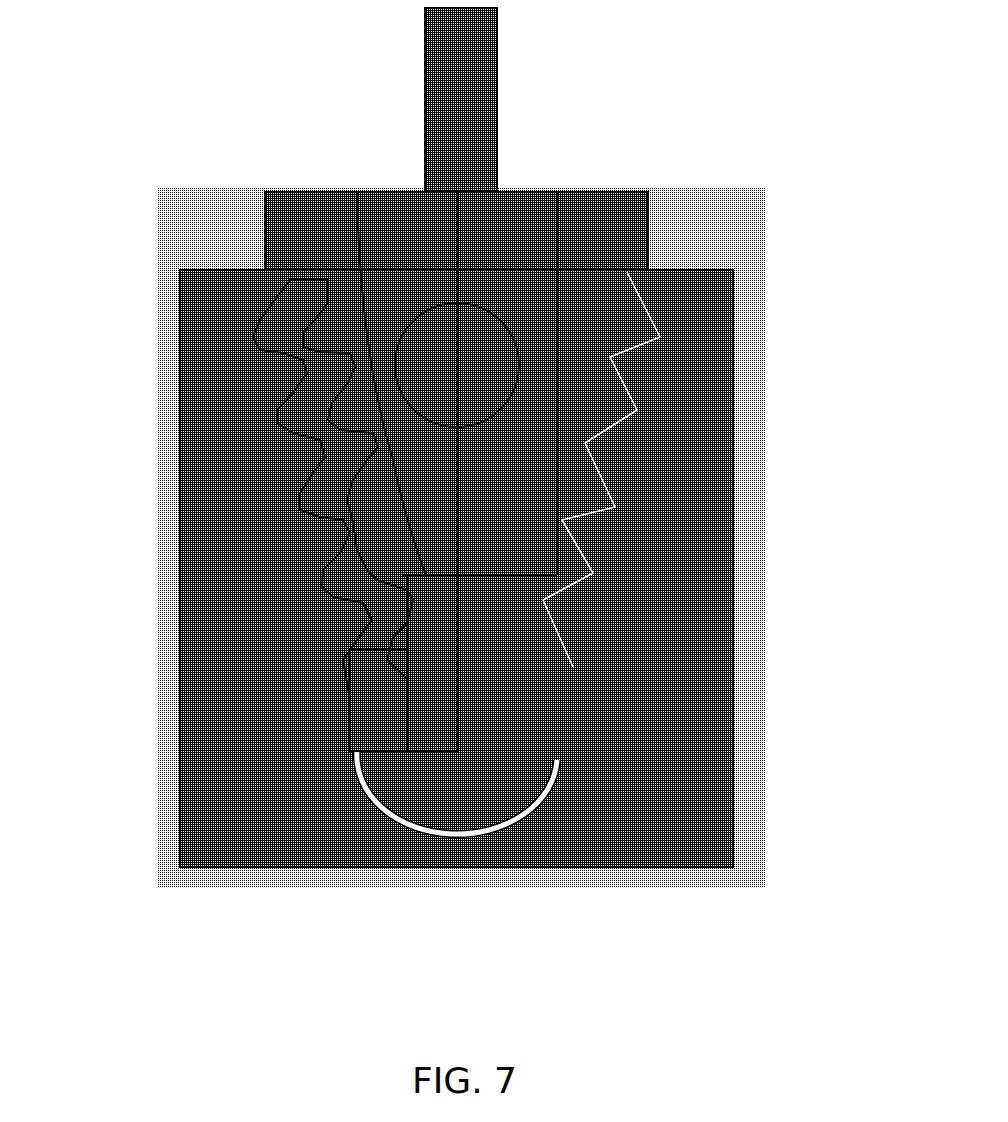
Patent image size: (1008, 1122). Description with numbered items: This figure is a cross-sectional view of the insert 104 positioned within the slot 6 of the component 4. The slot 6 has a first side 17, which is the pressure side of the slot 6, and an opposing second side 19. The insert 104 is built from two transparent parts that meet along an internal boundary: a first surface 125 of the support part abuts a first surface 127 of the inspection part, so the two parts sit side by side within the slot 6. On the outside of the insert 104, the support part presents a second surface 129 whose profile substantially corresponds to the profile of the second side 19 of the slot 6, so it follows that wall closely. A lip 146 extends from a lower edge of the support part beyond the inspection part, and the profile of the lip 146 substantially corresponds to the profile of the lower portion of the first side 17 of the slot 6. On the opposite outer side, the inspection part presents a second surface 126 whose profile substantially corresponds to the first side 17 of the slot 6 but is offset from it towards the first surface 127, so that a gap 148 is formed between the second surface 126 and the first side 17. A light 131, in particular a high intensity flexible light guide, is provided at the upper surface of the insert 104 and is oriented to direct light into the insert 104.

The component 4 is at (735, 785).
The slot 6 is at (522, 815).
The first side 17 is at (320, 563).
The second side 19 is at (590, 562).
The insert 104 is at (603, 155).
The first surface of the support part 125 is at (458, 720).
The second surface of the inspection part 126 is at (400, 632).
The first surface of the inspection part 127 is at (457, 685).
The second surface of the support part 129 is at (570, 683).
The light 131 is at (425, 80).
The lip 146 is at (400, 775).
The gap 148 is at (402, 728).